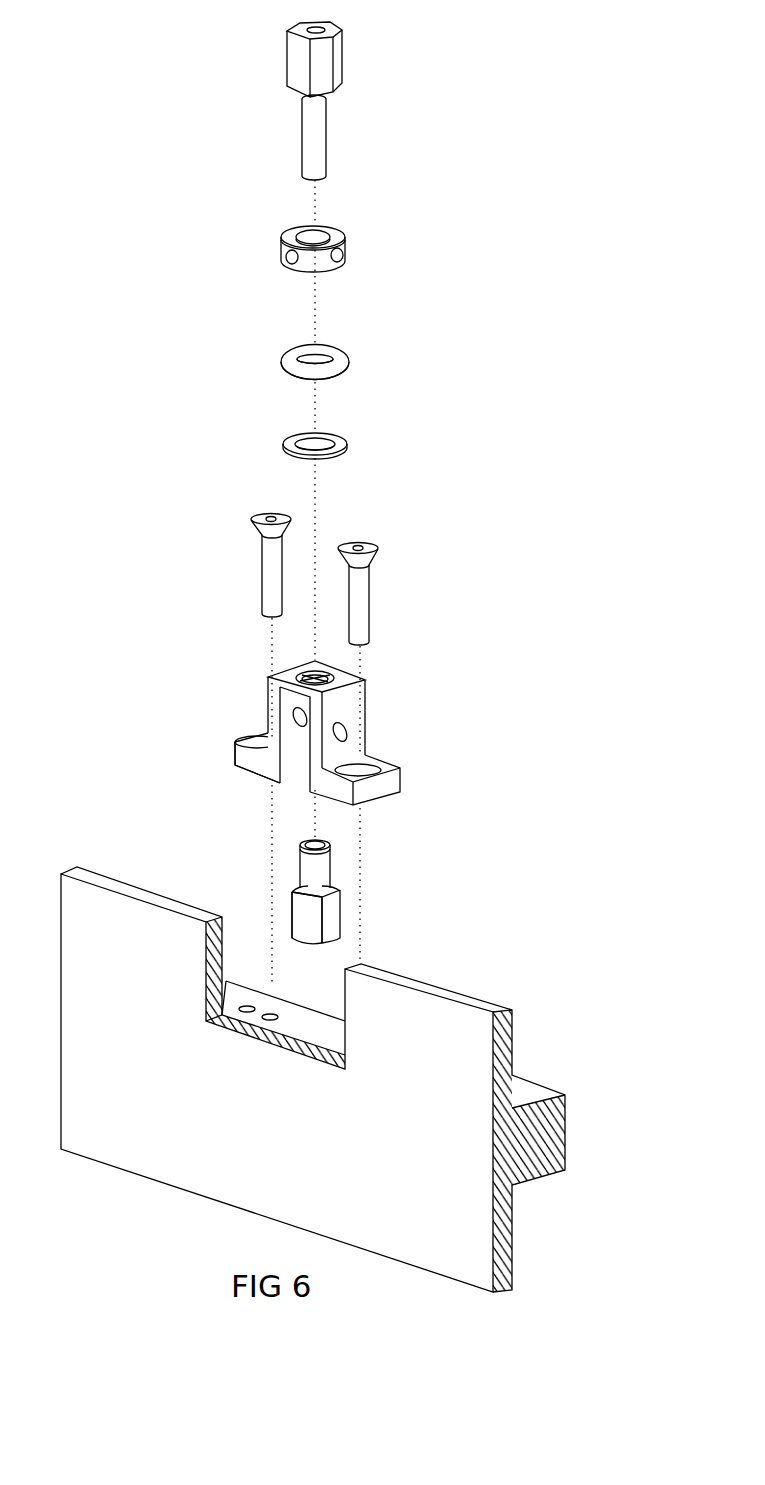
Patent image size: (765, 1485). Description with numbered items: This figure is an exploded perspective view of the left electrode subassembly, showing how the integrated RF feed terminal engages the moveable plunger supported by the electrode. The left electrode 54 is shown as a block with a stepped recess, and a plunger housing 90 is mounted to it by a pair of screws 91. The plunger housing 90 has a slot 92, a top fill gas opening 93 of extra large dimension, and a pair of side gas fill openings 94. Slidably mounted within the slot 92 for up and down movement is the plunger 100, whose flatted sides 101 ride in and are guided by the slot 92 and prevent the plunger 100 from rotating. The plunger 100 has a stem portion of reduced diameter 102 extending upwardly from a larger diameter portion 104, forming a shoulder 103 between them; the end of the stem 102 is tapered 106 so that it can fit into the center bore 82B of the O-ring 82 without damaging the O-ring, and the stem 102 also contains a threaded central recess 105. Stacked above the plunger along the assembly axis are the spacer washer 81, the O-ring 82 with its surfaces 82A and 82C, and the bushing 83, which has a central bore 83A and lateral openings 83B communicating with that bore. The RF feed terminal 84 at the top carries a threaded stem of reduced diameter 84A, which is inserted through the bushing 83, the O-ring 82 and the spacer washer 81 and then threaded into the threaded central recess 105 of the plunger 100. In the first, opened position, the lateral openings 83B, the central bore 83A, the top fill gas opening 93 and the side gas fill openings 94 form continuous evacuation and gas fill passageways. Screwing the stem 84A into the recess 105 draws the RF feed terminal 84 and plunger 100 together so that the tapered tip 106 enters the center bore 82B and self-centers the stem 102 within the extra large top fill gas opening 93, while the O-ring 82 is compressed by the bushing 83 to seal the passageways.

The left electrode 54 is at (437, 993).
The spacer washer 81 is at (345, 448).
The O-ring 82 is at (305, 370).
The washer inner bore 82A is at (300, 354).
The center bore of O-ring 82B is at (308, 357).
The washer outer surface 82C is at (337, 370).
The bushing 83 is at (345, 232).
The central bore of bushing 83A is at (318, 233).
The lateral opening of bushing 83B is at (348, 258).
The RF feed terminal 84 is at (328, 65).
The threaded stem of RF feed terminal 84A is at (313, 138).
The plunger housing 90 is at (350, 728).
The screw 91 is at (367, 543).
The slot 92 is at (297, 748).
The top fill gas opening 93 is at (343, 676).
The side gas fill opening 94 is at (312, 677).
The plunger 100 is at (370, 875).
The flatted side 101 is at (332, 917).
The stem portion of reduced diameter 102 is at (473, 844).
The shoulder 103 is at (297, 888).
The larger diameter portion 104 is at (308, 930).
The threaded central recess 105 is at (325, 838).
The tapered end 106 is at (330, 853).